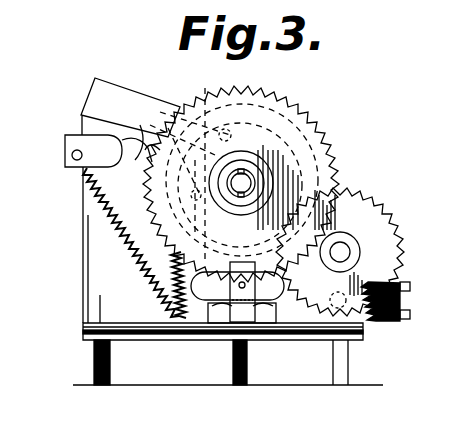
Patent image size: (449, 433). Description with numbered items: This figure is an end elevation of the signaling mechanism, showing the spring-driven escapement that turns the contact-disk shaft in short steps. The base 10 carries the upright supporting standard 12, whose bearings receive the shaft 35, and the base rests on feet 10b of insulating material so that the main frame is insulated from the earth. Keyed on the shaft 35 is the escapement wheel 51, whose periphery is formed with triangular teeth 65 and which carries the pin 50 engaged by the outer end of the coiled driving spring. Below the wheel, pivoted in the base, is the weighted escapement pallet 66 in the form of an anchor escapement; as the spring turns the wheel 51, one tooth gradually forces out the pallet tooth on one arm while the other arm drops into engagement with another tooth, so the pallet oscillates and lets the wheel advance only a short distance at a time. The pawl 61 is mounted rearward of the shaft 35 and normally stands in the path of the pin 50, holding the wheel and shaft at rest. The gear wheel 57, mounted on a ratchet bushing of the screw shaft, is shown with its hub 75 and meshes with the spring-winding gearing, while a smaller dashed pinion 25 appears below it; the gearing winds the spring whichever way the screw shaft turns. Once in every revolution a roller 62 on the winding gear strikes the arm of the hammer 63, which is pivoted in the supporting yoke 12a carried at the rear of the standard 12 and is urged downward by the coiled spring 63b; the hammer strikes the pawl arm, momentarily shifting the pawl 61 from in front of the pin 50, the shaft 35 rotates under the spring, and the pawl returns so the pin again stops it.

The pin 50 is at (241, 174).
The escapement wheel 51 is at (306, 119).
The roller 62 is at (242, 177).
The pawl 61 is at (226, 164).
The teeth 65 is at (332, 140).
The shaft 35 is at (244, 181).
The gear wheel 57 is at (364, 202).
The gear hub 75 is at (341, 251).
The pinion 25 is at (325, 296).
The supporting yoke 12a is at (133, 99).
The hammer 63 is at (122, 172).
The supporting standard 12 is at (116, 261).
The coiled spring 63b is at (150, 287).
The base 10 is at (125, 323).
The feet 10b is at (112, 361).
The weighted escapement pallet 66 is at (221, 289).